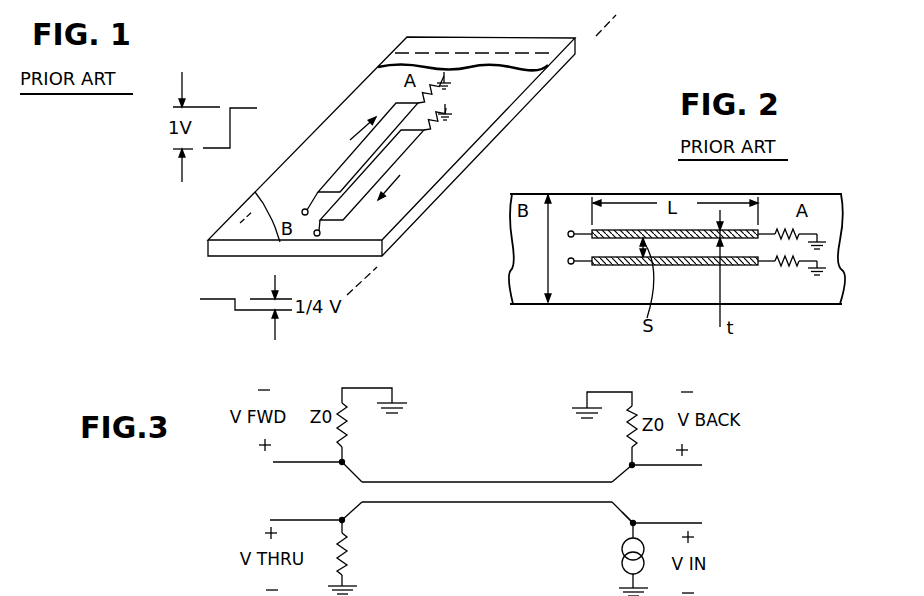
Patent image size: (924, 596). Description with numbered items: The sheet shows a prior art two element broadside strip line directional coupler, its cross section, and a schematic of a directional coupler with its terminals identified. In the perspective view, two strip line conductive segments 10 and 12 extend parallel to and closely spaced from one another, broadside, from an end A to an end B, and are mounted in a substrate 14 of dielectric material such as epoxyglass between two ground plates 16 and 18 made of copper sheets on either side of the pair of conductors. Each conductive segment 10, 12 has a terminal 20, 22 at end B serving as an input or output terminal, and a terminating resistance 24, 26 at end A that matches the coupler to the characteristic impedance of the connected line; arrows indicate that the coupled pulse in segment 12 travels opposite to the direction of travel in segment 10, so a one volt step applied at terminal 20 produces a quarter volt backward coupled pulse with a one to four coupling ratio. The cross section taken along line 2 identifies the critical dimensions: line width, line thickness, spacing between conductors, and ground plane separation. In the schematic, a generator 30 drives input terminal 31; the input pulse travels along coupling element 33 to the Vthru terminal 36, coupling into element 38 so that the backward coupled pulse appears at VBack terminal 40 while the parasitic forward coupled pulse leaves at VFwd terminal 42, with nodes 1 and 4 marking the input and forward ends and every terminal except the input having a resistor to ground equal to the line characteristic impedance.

In FIG. 1, the section line 2— 2 is at (604, 33).
In FIG. 3, the section line 2— 2 is at (321, 517).
In FIG. 1, the strip line conductive segment 10 is at (352, 163).
In FIG. 1, the strip line conductive segment 12 is at (398, 152).
In FIG. 1, the substrate 14 is at (517, 90).
In FIG. 1, the ground plate 16 is at (507, 37).
In FIG. 1, the ground plate 18 is at (500, 128).
In FIG. 1, the terminal 20 is at (305, 209).
In FIG. 1, the terminal 22 is at (320, 232).
In FIG. 1, the terminating resistance 24 is at (424, 93).
In FIG. 1, the terminating resistance 26 is at (433, 110).
In FIG. 3, the input port node 1 is at (650, 516).
In FIG. 3, the forward coupled port node 4 is at (357, 465).
In FIG. 3, the generator 30 is at (622, 557).
In FIG. 3, the input terminal 31 is at (638, 517).
In FIG. 3, the coupling element 33 is at (515, 502).
In FIG. 3, the Vthru terminal 36 is at (347, 527).
In FIG. 3, the coupling element 38 is at (458, 482).
In FIG. 3, the VBack terminal 40 is at (627, 465).
In FIG. 3, the VFwd terminal 42 is at (338, 467).